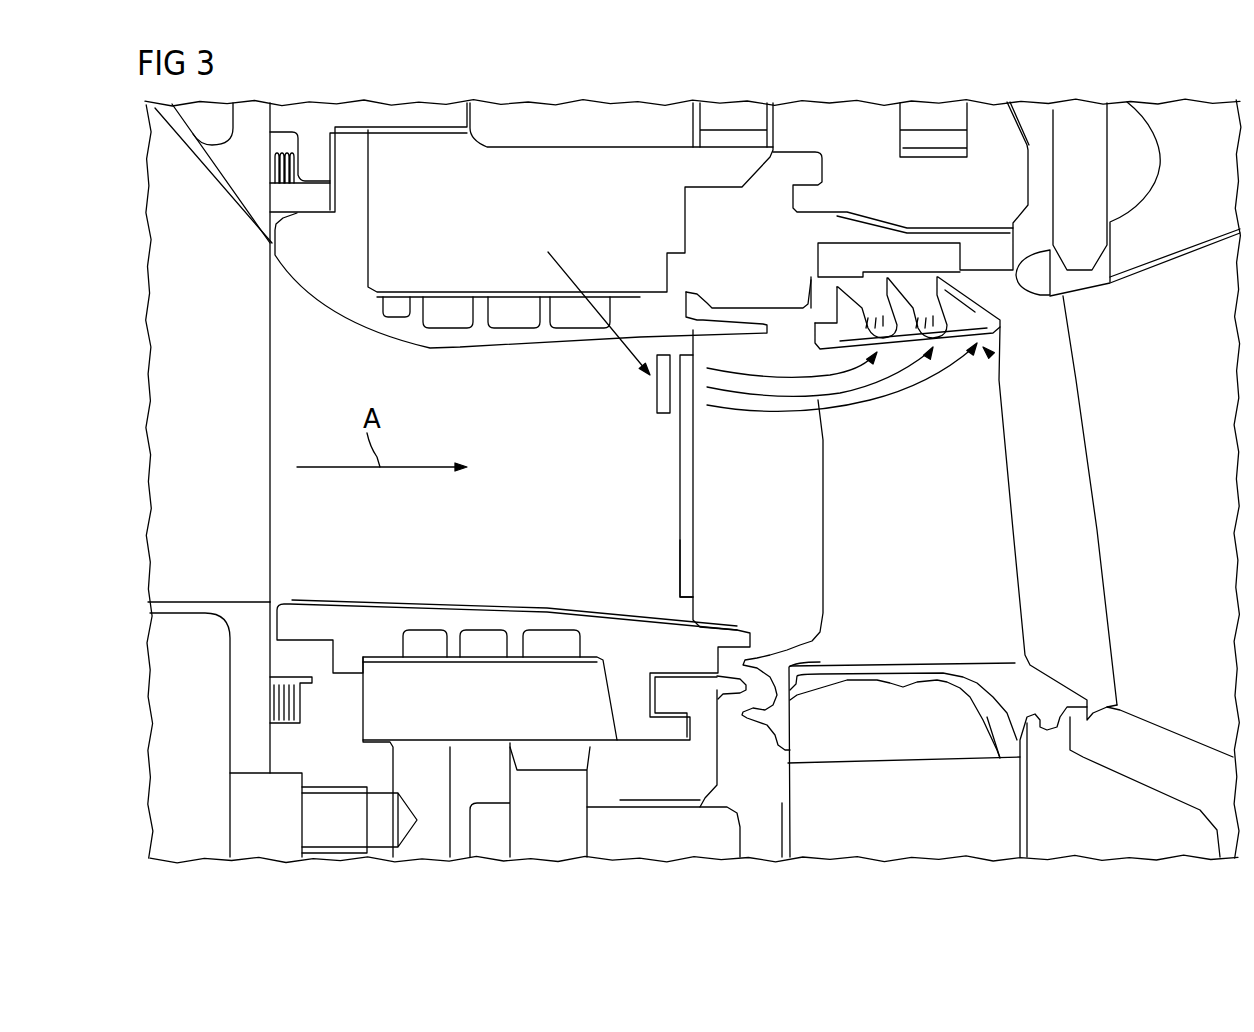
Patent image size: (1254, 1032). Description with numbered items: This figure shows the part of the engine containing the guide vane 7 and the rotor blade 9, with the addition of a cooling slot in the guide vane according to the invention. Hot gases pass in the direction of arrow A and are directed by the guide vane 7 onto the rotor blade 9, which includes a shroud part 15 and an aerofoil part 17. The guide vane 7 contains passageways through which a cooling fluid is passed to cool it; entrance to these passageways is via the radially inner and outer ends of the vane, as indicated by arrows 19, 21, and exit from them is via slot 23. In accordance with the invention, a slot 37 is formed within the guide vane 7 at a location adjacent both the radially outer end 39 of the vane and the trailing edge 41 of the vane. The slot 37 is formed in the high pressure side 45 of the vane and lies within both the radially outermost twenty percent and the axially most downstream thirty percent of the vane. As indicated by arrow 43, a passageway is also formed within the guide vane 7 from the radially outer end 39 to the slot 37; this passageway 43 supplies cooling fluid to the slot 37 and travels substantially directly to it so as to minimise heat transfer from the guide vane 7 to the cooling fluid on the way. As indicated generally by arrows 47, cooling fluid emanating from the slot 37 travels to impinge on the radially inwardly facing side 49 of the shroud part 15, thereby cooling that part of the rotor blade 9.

The guide vane 7 is at (460, 556).
The rotor blade 9 is at (1041, 619).
The shroud part 15 is at (1000, 323).
The aerofoil part 17 is at (1005, 535).
The arrow indicating cooling fluid entrance at radially inner end 19 is at (537, 648).
The arrow indicating cooling fluid entrance at radially outer end 21 is at (528, 300).
The slot 23 is at (687, 553).
The slot 37 is at (657, 386).
The radially outer end 39 is at (640, 332).
The trailing edge 41 is at (693, 470).
The passageway 43 is at (565, 262).
The high pressure side 45 is at (588, 561).
The arrows indicating cooling fluid flow 47 is at (818, 400).
The radially inwardly facing side 49 is at (992, 356).